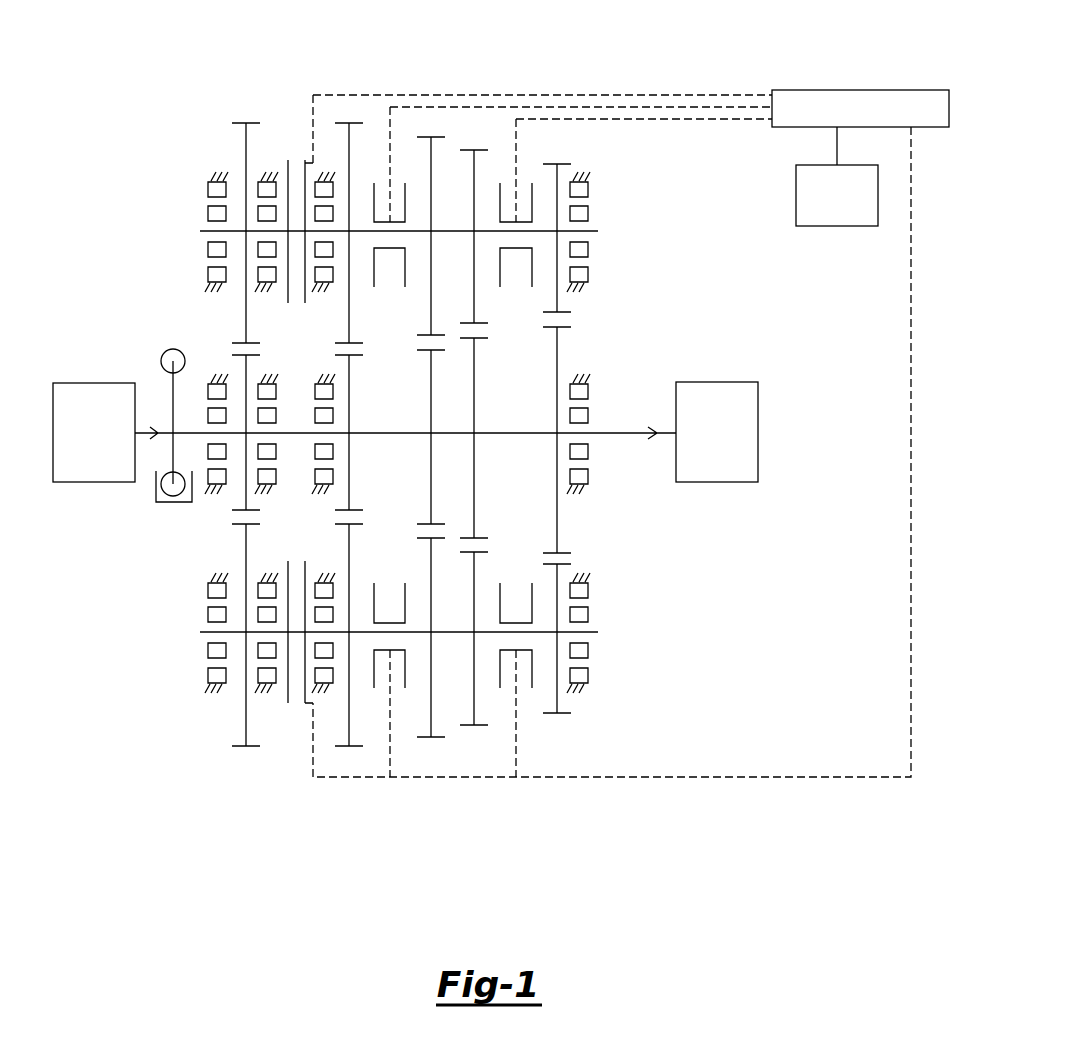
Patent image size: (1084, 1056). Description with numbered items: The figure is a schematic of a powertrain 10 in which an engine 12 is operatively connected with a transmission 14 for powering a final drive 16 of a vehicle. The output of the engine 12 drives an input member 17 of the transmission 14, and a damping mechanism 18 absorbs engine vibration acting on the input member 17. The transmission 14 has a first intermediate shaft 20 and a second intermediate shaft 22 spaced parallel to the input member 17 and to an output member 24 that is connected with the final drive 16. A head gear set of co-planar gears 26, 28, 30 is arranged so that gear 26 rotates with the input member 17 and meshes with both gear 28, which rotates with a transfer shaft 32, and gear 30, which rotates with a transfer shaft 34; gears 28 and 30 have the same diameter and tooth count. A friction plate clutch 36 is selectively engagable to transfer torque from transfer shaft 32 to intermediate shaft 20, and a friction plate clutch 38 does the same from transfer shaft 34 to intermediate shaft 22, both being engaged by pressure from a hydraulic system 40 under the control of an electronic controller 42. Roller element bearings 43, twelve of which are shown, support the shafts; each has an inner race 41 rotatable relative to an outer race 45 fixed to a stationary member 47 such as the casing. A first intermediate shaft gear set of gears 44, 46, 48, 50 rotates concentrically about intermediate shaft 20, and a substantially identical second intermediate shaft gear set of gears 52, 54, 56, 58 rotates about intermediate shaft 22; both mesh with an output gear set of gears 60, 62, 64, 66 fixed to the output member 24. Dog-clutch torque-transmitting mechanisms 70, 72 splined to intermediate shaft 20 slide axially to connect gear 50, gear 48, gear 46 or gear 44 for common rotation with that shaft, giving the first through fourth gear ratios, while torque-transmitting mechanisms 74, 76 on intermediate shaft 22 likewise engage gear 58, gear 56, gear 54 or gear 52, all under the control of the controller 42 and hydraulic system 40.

The powertrain 10 is at (170, 81).
The engine 12 is at (113, 383).
The transmission 14 is at (197, 152).
The final drive 16 is at (736, 382).
The input member 17 is at (167, 430).
The damping mechanism 18 is at (197, 506).
The first intermediate shaft 20 is at (627, 226).
The second intermediate shaft 22 is at (598, 632).
The output member 24 is at (612, 432).
The gear 26 is at (246, 358).
The gear 28 is at (246, 311).
The gear 30 is at (246, 724).
The transfer shaft 32 is at (200, 231).
The transfer shaft 34 is at (202, 632).
The friction plate clutch 36 is at (297, 160).
The friction plate clutch 38 is at (294, 712).
The hydraulic system 40 is at (888, 90).
The inner race 41 is at (588, 249).
The electronic controller 42 is at (833, 226).
The roller element bearing 43 is at (608, 260).
The gear 44 is at (349, 287).
The outer race 45 is at (588, 280).
The gear 46 is at (431, 310).
The stationary member 47 is at (590, 178).
The gear 48 is at (474, 297).
The gear 50 is at (560, 305).
The gear 52 is at (349, 548).
The gear 54 is at (431, 567).
The gear 56 is at (475, 565).
The gear 58 is at (557, 582).
The gear 60 is at (349, 376).
The gear 62 is at (431, 418).
The gear 64 is at (474, 382).
The gear 66 is at (557, 425).
The torque-transmitting mechanism 70 is at (500, 196).
The torque-transmitting mechanism 72 is at (405, 205).
The torque-transmitting mechanism 74 is at (500, 660).
The torque-transmitting mechanism 76 is at (405, 665).